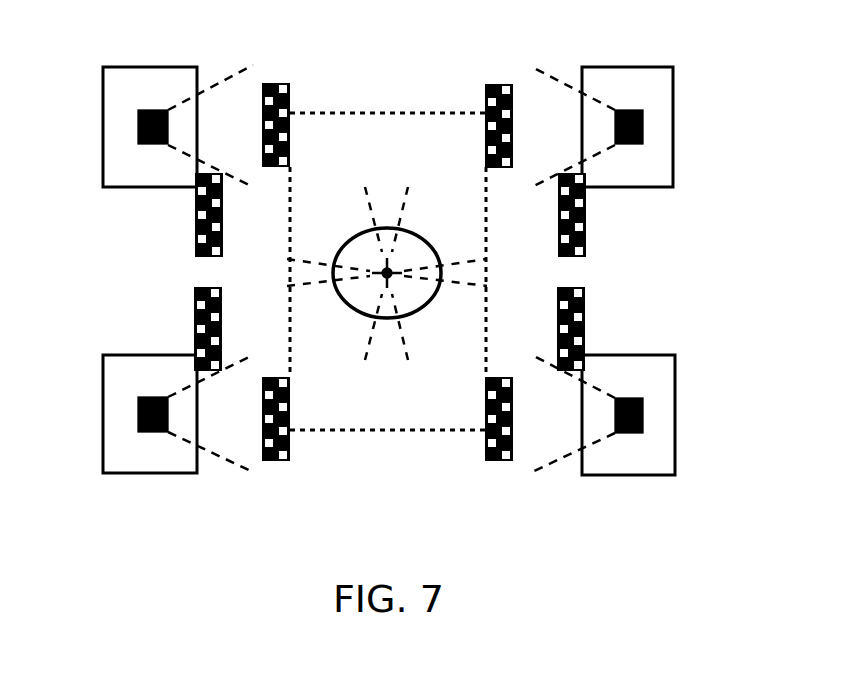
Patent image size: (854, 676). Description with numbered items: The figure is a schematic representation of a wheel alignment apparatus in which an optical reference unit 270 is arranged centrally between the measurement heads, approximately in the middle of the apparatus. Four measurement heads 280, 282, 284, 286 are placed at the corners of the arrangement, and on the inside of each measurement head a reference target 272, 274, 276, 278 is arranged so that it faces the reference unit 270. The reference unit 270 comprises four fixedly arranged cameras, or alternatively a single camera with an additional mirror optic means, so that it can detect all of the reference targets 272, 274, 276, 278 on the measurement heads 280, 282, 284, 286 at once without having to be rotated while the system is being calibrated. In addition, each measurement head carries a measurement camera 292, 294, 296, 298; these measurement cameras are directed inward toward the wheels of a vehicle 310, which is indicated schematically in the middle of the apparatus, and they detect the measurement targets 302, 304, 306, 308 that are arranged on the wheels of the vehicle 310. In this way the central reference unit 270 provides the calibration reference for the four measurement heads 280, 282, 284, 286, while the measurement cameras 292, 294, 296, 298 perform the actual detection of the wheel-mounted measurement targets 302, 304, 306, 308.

The optical reference unit 270 is at (418, 235).
The reference target 272 is at (585, 218).
The reference target 274 is at (193, 222).
The reference target 276 is at (193, 320).
The reference target 278 is at (586, 322).
The measurement head 280 is at (660, 118).
The measurement head 282 is at (122, 125).
The measurement head 284 is at (122, 416).
The measurement head 286 is at (655, 417).
The measurement camera 292 is at (628, 110).
The measurement camera 294 is at (155, 110).
The measurement camera 296 is at (152, 432).
The measurement camera 298 is at (628, 435).
The measurement target 302 is at (495, 85).
The measurement target 304 is at (276, 83).
The measurement target 306 is at (282, 457).
The measurement target 308 is at (492, 457).
The vehicle 310 is at (492, 268).